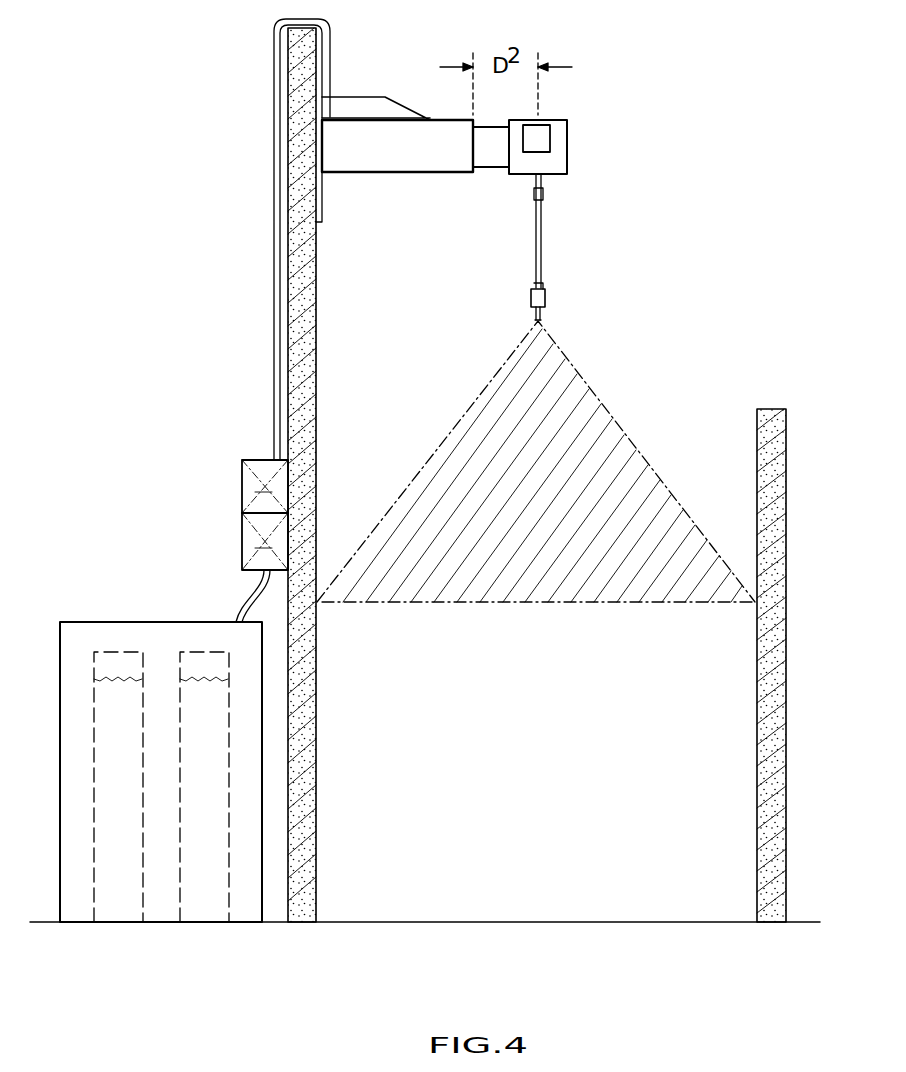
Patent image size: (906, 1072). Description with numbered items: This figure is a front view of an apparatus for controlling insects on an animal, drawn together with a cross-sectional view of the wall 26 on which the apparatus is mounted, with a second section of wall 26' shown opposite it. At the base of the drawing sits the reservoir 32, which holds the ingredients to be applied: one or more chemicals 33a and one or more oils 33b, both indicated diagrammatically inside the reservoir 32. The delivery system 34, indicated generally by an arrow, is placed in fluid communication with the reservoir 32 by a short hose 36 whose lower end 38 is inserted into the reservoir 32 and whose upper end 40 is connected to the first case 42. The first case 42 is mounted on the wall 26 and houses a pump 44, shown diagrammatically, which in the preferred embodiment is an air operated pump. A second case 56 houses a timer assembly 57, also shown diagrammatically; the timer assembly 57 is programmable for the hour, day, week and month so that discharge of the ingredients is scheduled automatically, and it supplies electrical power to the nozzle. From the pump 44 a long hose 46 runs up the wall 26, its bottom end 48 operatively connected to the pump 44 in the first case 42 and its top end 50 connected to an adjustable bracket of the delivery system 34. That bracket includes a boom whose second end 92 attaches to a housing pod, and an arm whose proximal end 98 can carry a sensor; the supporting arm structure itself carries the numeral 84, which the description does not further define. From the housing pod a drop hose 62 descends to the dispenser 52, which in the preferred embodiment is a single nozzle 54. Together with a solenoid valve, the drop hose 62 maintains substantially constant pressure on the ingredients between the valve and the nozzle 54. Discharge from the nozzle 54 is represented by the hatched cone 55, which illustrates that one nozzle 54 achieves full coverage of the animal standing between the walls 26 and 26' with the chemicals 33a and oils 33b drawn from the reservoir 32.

The wall 26 is at (350, 475).
The wall 26' is at (507, 687).
The reservoir 32 is at (60, 642).
The chemicals 33a is at (110, 912).
The oils 33b is at (208, 912).
The delivery system 34 is at (170, 387).
The short hose 36 is at (256, 588).
The lower end of short hose 38 is at (242, 620).
The upper end of short hose 40 is at (262, 575).
The first case 42 is at (242, 524).
The pump 44 is at (262, 548).
The long hose 46 is at (275, 352).
The bottom end of long hose 48 is at (270, 458).
The top end of long hose 50 is at (324, 118).
The dispenser 52 is at (546, 314).
The nozzle 54 is at (536, 321).
The cone 55 is at (450, 603).
The second case 56 is at (242, 466).
The timer assembly 57 is at (262, 492).
The drop hose 62 is at (542, 258).
The support arm 84 is at (378, 174).
The second end of boom 92 is at (498, 167).
The proximal end of arm 98 is at (567, 150).